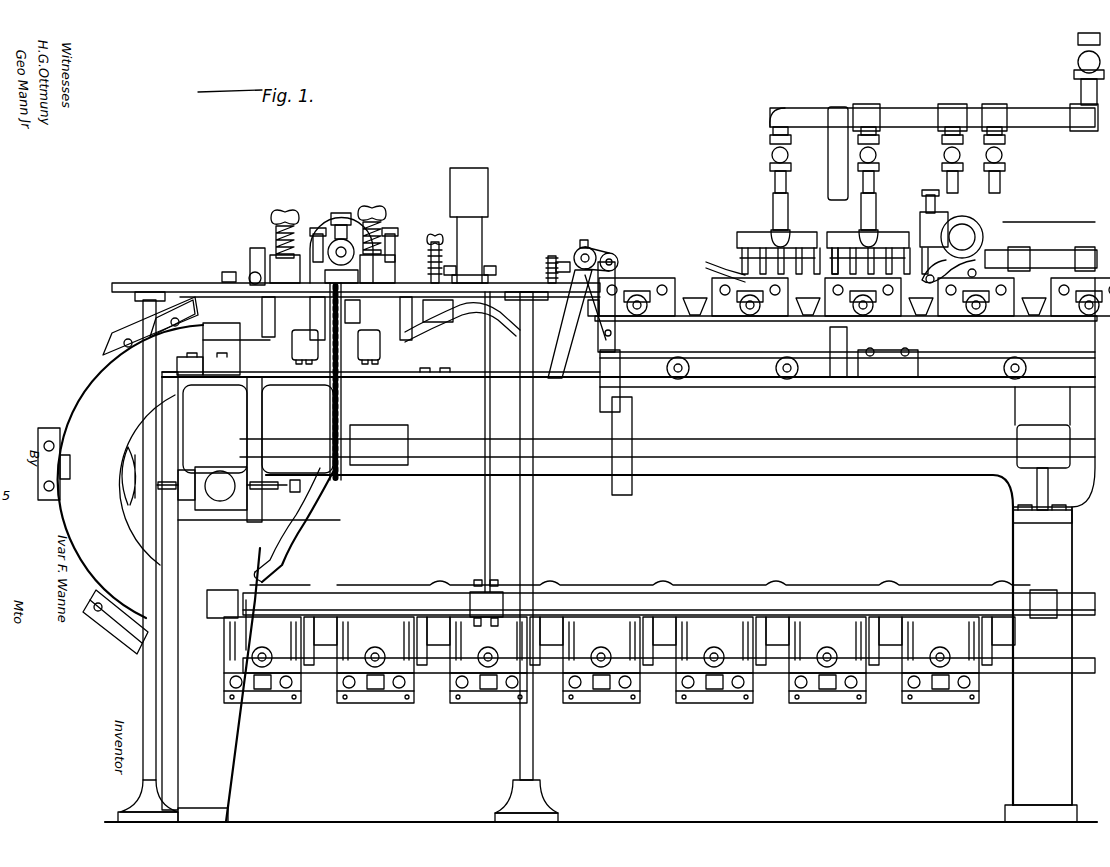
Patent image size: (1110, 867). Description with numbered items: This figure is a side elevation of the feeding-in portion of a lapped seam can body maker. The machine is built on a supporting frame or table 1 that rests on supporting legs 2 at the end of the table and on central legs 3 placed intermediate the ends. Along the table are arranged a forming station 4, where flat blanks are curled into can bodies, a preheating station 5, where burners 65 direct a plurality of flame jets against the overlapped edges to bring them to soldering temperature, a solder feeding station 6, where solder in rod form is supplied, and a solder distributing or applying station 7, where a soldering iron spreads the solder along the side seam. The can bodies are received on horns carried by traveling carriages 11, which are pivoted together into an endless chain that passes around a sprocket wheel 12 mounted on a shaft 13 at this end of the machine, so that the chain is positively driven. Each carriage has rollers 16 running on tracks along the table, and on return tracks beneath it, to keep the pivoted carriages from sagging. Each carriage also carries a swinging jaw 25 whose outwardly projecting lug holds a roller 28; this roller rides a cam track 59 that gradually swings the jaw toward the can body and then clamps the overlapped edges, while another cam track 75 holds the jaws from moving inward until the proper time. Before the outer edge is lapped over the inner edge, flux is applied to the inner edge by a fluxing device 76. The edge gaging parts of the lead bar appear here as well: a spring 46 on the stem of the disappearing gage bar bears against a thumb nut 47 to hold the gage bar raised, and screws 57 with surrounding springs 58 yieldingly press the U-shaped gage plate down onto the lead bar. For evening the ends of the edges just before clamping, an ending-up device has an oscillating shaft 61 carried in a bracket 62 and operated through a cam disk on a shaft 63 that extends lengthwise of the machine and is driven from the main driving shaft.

The supporting frame or table 1 is at (877, 470).
The supporting legs 2 is at (230, 762).
The central legs 3 is at (1041, 623).
The forming station 4 is at (400, 243).
The preheating station 5 is at (797, 240).
The solder feeding station 6 is at (1012, 158).
The solder distributing or applying station 7 is at (1046, 242).
The traveling carriages 11 is at (393, 660).
The sprocket wheel 12 is at (325, 508).
The shaft 13 is at (219, 472).
The rollers 16 is at (1018, 353).
The swinging jaw 25 is at (122, 638).
The roller 28 is at (645, 316).
The spring 46 is at (430, 262).
The thumb nut 47 is at (445, 252).
The screws 57 is at (552, 256).
The springs 58 is at (538, 264).
The cam track 59 is at (494, 355).
The oscillating shaft 61 is at (588, 256).
The bracket 62 is at (590, 378).
The shaft 63 is at (684, 446).
The burners 65 is at (712, 264).
The cam track 75 is at (462, 308).
The fluxing device 76 is at (487, 195).